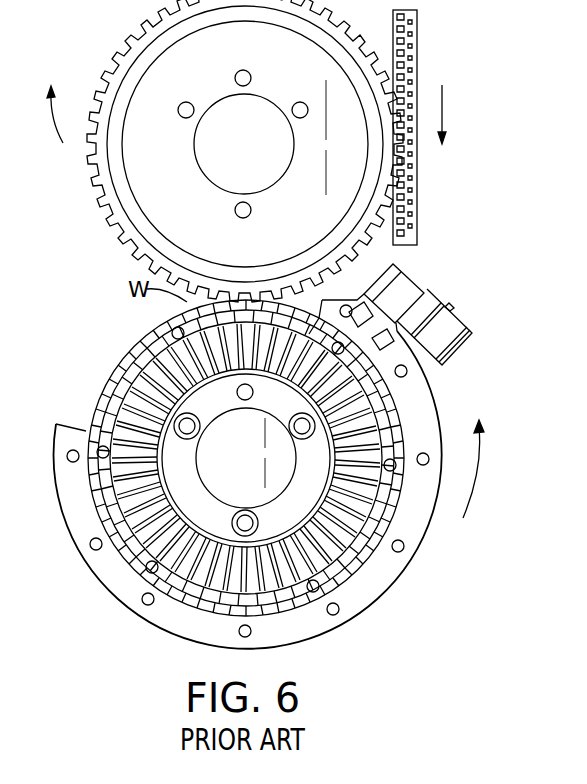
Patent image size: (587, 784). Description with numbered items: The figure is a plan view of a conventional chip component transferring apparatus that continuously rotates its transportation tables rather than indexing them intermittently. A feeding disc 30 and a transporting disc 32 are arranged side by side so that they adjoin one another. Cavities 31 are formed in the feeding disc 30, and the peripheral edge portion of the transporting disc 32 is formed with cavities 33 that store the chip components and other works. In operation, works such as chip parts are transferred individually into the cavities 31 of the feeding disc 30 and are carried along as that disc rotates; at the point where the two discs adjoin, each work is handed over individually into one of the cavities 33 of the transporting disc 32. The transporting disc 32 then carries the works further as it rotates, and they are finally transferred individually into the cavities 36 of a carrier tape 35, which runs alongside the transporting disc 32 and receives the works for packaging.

The feeding disc 30 is at (147, 358).
The cavities 31 is at (91, 398).
The transporting disc 32 is at (111, 212).
The cavities 33 is at (137, 255).
The carrier tape 35 is at (418, 186).
The cavities 36 is at (400, 33).